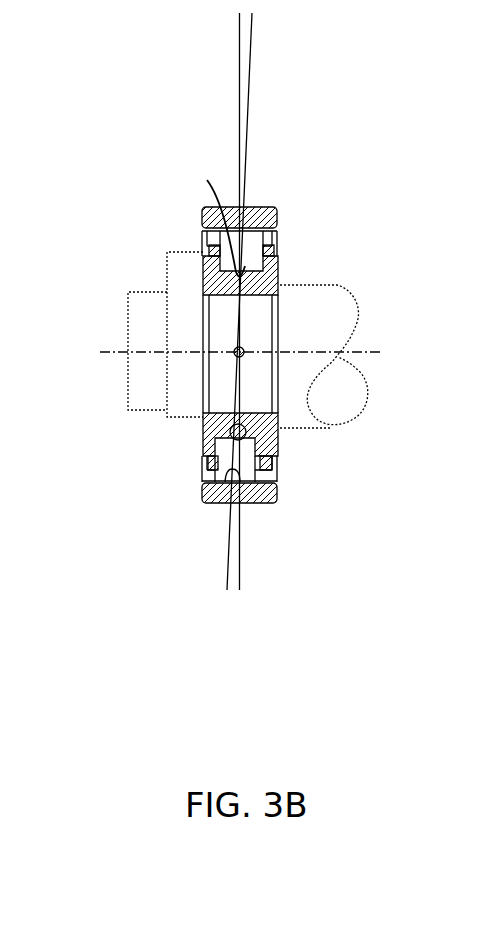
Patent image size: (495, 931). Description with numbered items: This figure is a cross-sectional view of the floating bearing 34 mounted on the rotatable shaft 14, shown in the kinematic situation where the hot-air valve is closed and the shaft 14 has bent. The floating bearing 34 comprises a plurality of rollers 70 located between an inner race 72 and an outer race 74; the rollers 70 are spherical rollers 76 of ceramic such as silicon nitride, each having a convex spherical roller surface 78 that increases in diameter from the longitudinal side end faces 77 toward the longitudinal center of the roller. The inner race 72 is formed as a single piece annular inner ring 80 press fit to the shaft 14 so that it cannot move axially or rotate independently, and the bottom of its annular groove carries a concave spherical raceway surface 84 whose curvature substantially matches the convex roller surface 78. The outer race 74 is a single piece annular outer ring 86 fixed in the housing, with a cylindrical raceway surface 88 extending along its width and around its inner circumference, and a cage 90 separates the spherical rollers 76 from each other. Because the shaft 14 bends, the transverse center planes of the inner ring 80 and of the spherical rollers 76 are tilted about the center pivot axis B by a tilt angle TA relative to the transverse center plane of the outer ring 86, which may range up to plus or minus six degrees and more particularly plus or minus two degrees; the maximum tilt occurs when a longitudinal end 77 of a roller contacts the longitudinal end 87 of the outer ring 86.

The rotatable shaft 14 is at (297, 380).
The floating bearing 34 is at (279, 452).
The rollers 70 is at (320, 203).
The inner race 72 is at (321, 261).
The outer race 74 is at (295, 193).
The spherical rollers 76 is at (277, 225).
The longitudinal side end face 77 is at (212, 470).
The convex spherical roller surface 78 is at (206, 215).
The inner ring 80 is at (280, 267).
The concave spherical raceway surface 84 is at (233, 426).
The outer ring 86 is at (233, 250).
The longitudinal end of the outer ring 87 is at (202, 490).
The cylindrical raceway surface 88 is at (225, 482).
The cage 90 is at (202, 232).
The center (pivot) axis B is at (246, 347).
The tilt angle TA is at (198, 33).